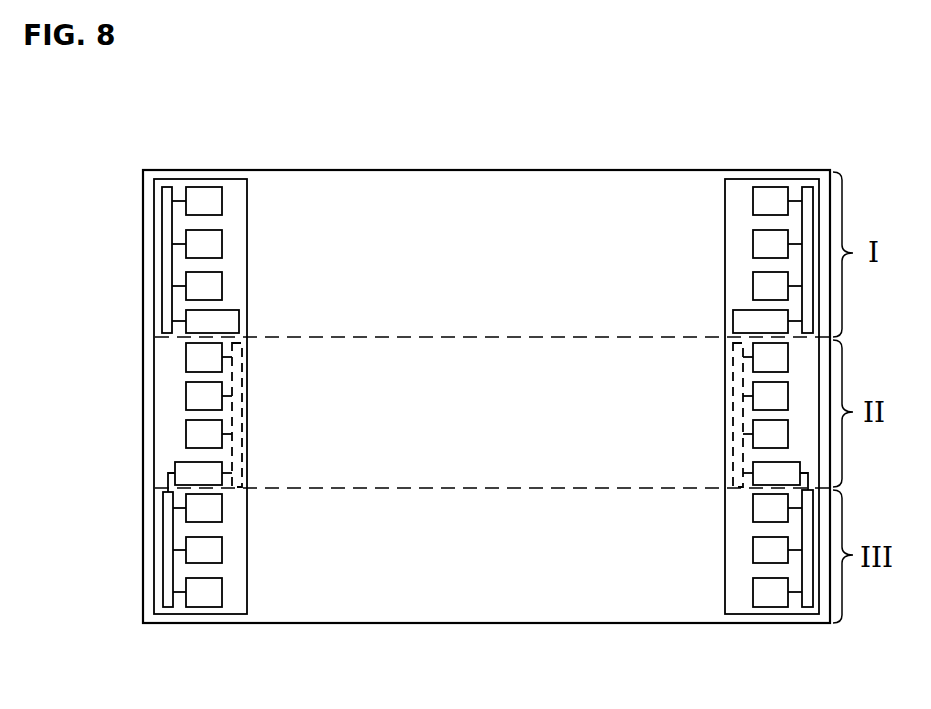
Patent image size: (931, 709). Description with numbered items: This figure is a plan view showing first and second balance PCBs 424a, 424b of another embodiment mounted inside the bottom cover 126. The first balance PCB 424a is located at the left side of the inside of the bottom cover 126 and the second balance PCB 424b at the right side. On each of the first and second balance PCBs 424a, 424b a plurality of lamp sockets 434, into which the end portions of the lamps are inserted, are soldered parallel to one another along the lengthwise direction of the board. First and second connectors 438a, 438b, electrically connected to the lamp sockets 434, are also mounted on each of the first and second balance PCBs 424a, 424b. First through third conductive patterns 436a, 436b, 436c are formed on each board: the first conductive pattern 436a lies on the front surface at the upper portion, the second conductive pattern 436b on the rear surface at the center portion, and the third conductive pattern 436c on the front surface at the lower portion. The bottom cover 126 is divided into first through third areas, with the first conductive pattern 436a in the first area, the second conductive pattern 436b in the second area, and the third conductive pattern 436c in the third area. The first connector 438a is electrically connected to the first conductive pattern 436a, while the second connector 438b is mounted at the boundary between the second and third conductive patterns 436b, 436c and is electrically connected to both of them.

The bottom cover 126 is at (495, 187).
The first balance PCB 424a is at (227, 179).
The second balance PCB 424b is at (769, 180).
The lamp socket 434 is at (222, 240).
The first conductive pattern 436a is at (165, 261).
The second conductive pattern 436b is at (242, 403).
The third conductive pattern 436c is at (163, 543).
The first connector 438a is at (239, 318).
The second connector 438b is at (178, 467).